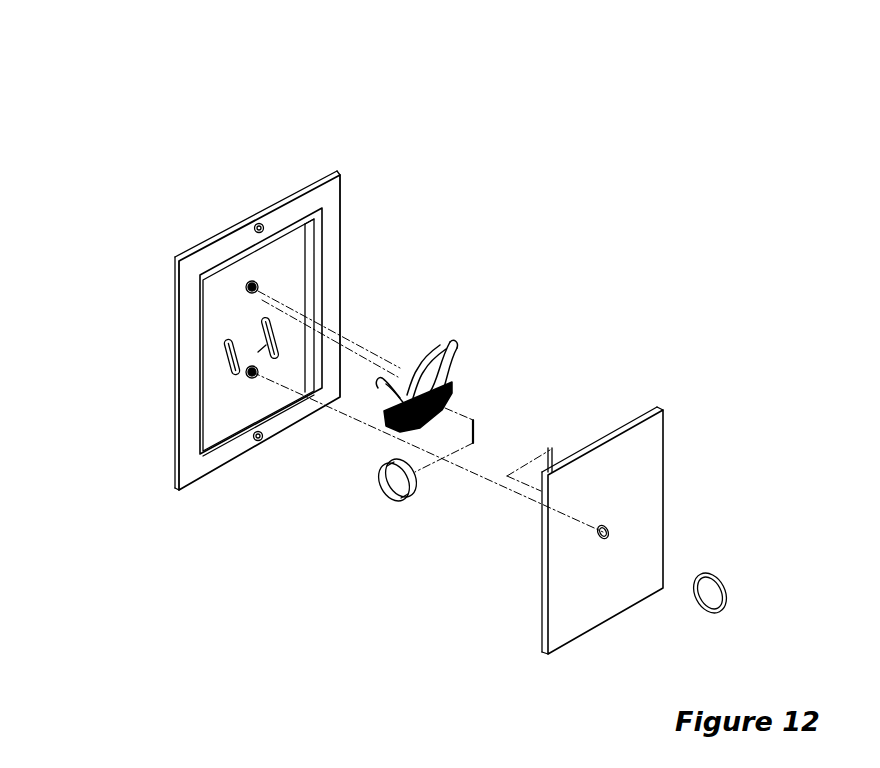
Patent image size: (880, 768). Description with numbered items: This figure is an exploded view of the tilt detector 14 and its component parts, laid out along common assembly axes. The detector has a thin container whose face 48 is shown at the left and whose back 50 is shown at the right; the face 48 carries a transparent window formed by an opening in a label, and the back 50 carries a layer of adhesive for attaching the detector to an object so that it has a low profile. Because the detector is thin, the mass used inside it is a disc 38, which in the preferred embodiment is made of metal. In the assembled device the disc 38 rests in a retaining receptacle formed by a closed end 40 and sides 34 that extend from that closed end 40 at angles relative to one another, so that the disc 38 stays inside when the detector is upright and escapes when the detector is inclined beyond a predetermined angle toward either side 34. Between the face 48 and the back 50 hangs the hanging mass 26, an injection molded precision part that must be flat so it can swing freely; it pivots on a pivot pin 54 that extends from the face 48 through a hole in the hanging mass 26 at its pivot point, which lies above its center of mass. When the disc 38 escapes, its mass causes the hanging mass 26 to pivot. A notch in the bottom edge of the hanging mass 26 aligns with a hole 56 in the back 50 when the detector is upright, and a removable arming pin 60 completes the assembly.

The tilt detector 14 is at (452, 218).
The hanging mass 26 is at (450, 385).
The sides 34 is at (230, 356).
The disc 38 is at (396, 486).
The closed end 40 is at (246, 375).
The face 48 is at (217, 410).
The back 50 is at (638, 477).
The pivot pin 54 is at (246, 285).
The hole 56 is at (598, 535).
The removable arming pin 60 is at (712, 594).